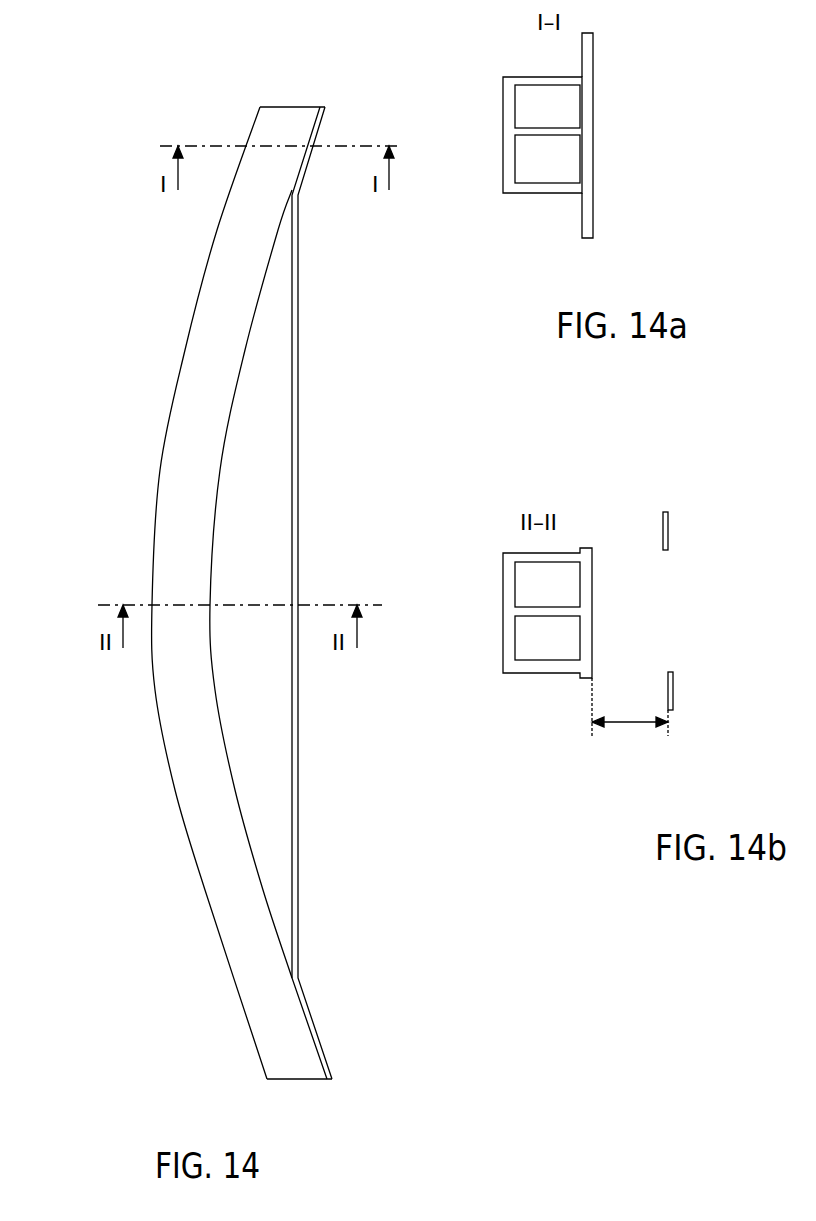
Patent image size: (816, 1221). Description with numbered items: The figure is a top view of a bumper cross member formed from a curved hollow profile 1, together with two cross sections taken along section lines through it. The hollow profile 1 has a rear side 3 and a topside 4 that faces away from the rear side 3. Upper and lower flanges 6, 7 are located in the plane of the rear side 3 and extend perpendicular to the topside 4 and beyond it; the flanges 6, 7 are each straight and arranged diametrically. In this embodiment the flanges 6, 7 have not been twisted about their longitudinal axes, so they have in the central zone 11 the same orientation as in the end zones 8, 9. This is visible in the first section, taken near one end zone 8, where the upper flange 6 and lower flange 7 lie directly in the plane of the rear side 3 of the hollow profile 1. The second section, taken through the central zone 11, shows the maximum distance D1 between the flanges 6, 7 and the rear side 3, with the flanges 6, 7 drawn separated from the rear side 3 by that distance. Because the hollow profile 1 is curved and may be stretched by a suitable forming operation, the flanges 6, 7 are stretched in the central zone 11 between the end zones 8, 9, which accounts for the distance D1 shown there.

In FIG. 14, the hollow profile 1 is at (209, 556).
In FIG. 14a, the hollow profile 1 is at (532, 131).
In FIG. 14b, the hollow profile 1 is at (550, 613).
In FIG. 14, the rear side 3 is at (214, 504).
In FIG. 14b, the rear side 3 is at (592, 608).
In FIG. 14, the topside 4 is at (140, 419).
In FIG. 14, the upper flange 6 is at (298, 352).
In FIG. 14a, the upper flange 6 is at (592, 45).
In FIG. 14b, the upper flange 6 is at (668, 528).
In FIG. 14a, the lower flange 7 is at (586, 225).
In FIG. 14b, the lower flange 7 is at (673, 695).
In FIG. 14, the end zone 8 is at (273, 118).
In FIG. 14, the end zone 9 is at (302, 1062).
In FIG. 14, the central zone 11 is at (150, 551).
In FIG. 14b, the maximum distance D1 is at (630, 718).